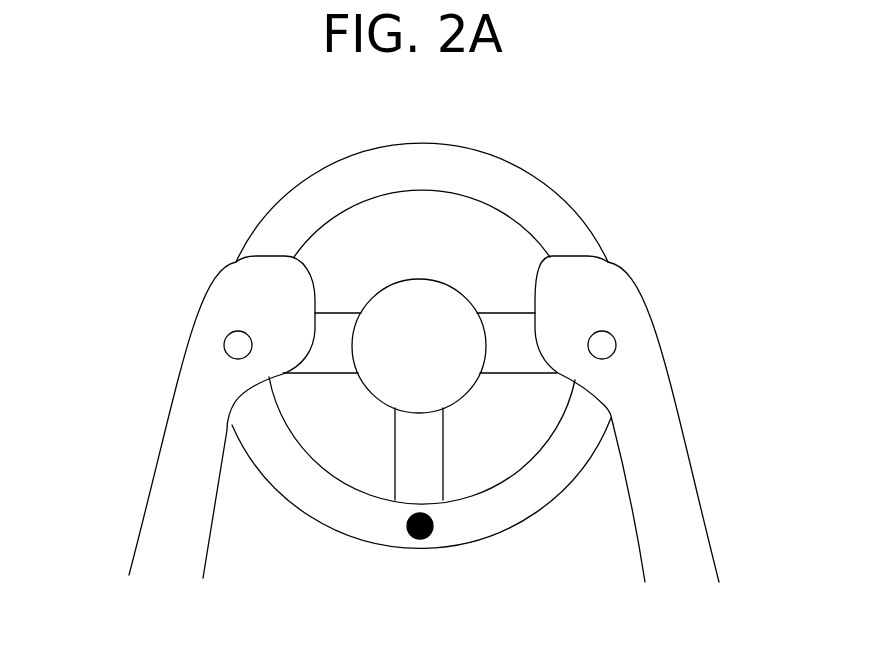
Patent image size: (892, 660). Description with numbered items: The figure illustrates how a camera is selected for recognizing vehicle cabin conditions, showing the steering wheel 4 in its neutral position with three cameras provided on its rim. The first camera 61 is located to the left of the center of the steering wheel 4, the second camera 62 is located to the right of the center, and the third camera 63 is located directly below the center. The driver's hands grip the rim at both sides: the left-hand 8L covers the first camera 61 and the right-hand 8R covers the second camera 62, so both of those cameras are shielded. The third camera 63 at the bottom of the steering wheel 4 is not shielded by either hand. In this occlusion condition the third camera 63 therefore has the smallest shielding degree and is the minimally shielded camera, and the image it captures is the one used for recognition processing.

The steering wheel 4 is at (273, 205).
The left-hand 8L is at (197, 327).
The right-hand 8R is at (614, 266).
The first camera 61 is at (236, 331).
The second camera 62 is at (612, 335).
The third camera 63 is at (433, 525).